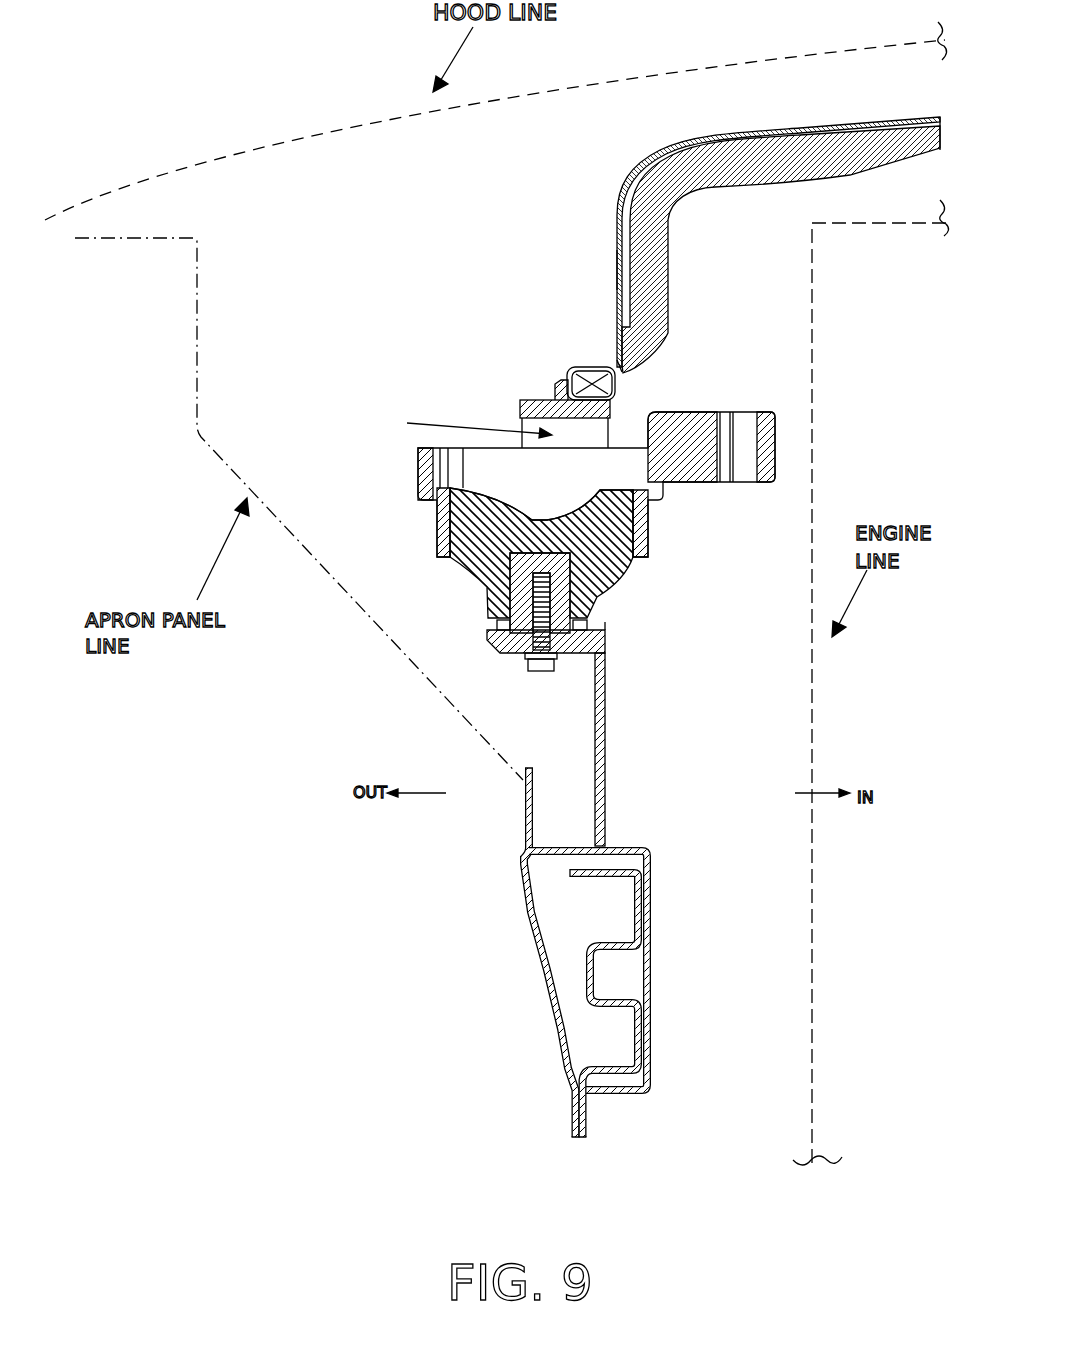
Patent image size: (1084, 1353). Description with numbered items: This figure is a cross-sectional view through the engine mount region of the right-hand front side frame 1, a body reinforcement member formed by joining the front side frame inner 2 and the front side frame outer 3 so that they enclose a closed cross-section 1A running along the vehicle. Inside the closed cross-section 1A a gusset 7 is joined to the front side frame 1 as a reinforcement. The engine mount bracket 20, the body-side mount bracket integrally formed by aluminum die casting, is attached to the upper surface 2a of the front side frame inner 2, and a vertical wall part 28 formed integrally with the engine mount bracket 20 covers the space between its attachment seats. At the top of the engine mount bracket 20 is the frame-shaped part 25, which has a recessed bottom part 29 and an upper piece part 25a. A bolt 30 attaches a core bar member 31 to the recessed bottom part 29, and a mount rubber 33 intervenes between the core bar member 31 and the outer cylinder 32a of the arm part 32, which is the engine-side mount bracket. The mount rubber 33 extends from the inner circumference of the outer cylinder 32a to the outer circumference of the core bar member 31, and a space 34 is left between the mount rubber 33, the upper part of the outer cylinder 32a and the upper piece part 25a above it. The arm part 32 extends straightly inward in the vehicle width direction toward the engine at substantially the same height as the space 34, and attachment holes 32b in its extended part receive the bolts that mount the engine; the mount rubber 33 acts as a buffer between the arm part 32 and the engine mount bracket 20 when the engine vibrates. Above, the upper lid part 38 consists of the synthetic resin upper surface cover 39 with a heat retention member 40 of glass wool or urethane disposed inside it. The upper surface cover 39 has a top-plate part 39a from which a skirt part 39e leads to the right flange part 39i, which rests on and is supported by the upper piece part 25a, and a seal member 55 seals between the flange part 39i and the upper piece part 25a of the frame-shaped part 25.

The front side frame 1 is at (557, 952).
The closed cross-section 1A is at (576, 1029).
The front side frame inner 2 is at (640, 967).
The upper surface of the front side frame inner 2a is at (627, 852).
The front side frame outer 3 is at (539, 966).
The gusset 7 is at (584, 951).
The engine mount bracket 20 is at (586, 719).
The frame-shaped part 25 is at (525, 380).
The upper piece part 25a is at (555, 396).
The vertical wall part 28 is at (607, 723).
The recessed bottom part 29 is at (606, 625).
The bolt 30 is at (540, 672).
The core bar member 31 is at (490, 580).
The arm part 32 is at (589, 458).
The outer cylinder 32a is at (418, 477).
The attachment holes 32b is at (740, 425).
The mount rubber 33 is at (508, 527).
The space 34 is at (467, 426).
The upper lid part 38 is at (721, 222).
The upper surface cover 39 is at (721, 222).
The top-plate part 39a is at (767, 128).
The skirt part 39e is at (617, 268).
The right flange part 39i is at (580, 368).
The heat retention member 40 is at (670, 223).
The seal member 55 is at (617, 387).